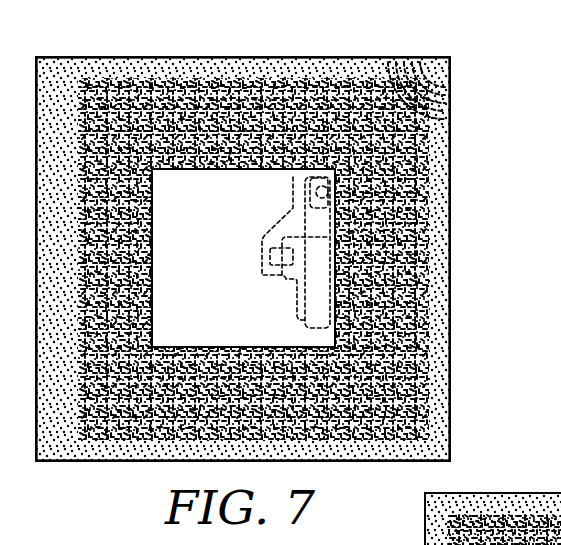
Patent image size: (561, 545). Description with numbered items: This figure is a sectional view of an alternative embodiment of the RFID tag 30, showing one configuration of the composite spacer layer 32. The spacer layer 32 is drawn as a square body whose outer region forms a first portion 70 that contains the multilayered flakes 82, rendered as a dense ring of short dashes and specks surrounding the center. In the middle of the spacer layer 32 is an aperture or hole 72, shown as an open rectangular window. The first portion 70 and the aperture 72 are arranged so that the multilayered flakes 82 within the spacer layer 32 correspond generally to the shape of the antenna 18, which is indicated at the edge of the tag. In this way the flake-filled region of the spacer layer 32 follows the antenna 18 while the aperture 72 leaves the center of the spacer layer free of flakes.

The antenna 18 is at (177, 57).
The RFID tag 30 is at (474, 55).
The composite spacer layer 32 is at (79, 62).
The first portion 70 is at (444, 216).
The aperture 72 is at (219, 171).
The multilayered flakes 82 is at (436, 155).